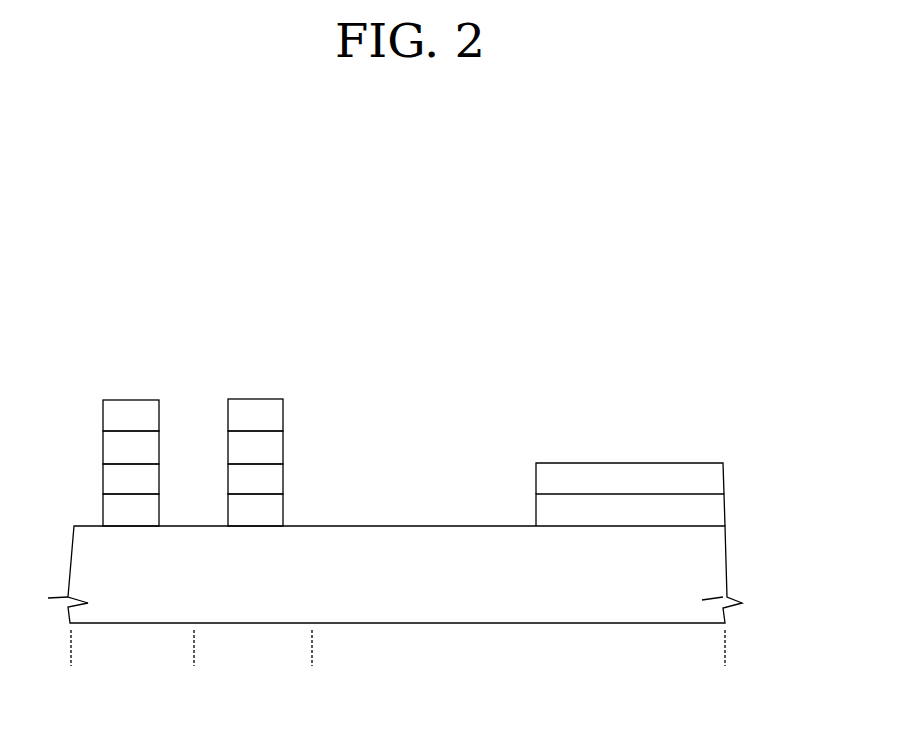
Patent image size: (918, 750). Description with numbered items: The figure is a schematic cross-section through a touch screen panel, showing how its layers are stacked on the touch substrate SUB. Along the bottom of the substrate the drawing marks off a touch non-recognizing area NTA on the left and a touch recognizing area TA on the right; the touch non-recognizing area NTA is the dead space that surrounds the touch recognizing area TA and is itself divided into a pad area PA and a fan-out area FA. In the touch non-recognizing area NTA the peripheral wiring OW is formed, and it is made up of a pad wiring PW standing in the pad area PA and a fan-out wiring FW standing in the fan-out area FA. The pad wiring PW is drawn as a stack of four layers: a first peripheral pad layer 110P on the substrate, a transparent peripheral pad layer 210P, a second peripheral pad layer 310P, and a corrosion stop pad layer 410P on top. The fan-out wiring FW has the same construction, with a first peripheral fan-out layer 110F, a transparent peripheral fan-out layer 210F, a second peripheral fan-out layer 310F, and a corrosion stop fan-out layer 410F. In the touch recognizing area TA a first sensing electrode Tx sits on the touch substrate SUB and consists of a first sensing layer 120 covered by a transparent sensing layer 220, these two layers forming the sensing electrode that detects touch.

The corrosion stop pad layer 410P is at (108, 407).
The second peripheral pad layer 310P is at (137, 472).
The transparent peripheral pad layer 210P is at (120, 438).
The first peripheral pad layer 110P is at (150, 507).
The corrosion stop fan-out layer 410F is at (243, 408).
The second peripheral fan-out layer 310F is at (262, 470).
The transparent peripheral fan-out layer 210F is at (250, 437).
The first peripheral fan-out layer 110F is at (275, 512).
The transparent sensing layer 220 is at (716, 481).
The first sensing layer 120 is at (716, 513).
The first sensing electrode Tx is at (691, 494).
The touch substrate SUB is at (710, 566).
The peripheral wiring OW is at (300, 267).
The pad wiring PW is at (193, 310).
The fan-out wiring FW is at (370, 310).
The pad area PA is at (194, 660).
The fan-out area FA is at (312, 660).
The touch recognizing area TA is at (725, 660).
The touch non-recognizing area NTA is at (263, 687).